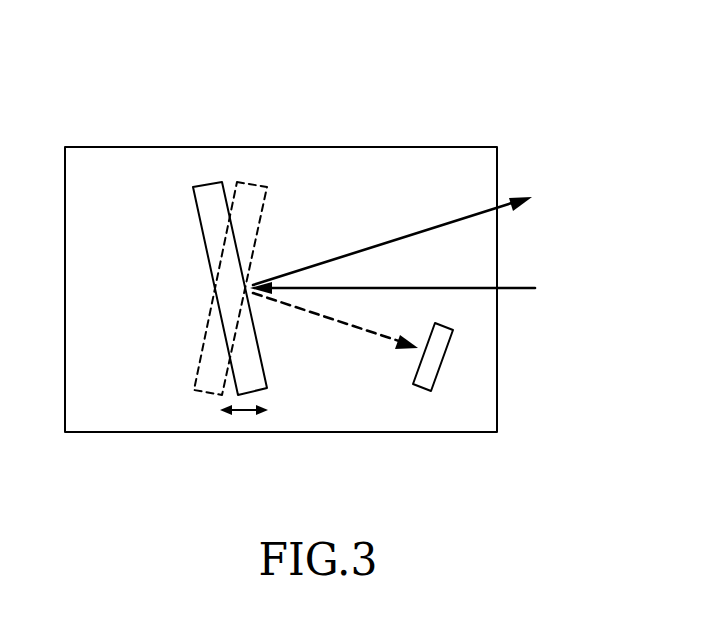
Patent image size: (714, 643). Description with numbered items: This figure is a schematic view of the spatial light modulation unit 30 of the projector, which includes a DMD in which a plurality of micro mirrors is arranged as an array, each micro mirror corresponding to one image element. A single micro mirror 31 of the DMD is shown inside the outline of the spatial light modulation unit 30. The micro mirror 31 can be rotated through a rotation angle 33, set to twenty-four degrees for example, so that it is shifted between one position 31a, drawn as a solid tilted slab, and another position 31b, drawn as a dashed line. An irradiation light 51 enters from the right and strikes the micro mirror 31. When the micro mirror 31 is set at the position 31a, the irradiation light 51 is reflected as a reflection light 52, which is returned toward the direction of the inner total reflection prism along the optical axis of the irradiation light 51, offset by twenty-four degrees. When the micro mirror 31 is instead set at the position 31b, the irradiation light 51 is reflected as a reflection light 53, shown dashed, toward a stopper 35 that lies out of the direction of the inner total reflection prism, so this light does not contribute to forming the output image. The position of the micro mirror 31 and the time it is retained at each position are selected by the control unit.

The spatial light modulation unit 30 is at (123, 147).
The micro mirror 31 is at (160, 75).
The one position of micro mirror 31a is at (211, 195).
The another position of micro mirror 31b is at (249, 198).
The rotation angle 33 is at (247, 412).
The stopper 35 is at (427, 378).
The irradiation light 51 is at (443, 288).
The reflection light 52 is at (412, 233).
The reflection light 53 is at (358, 328).